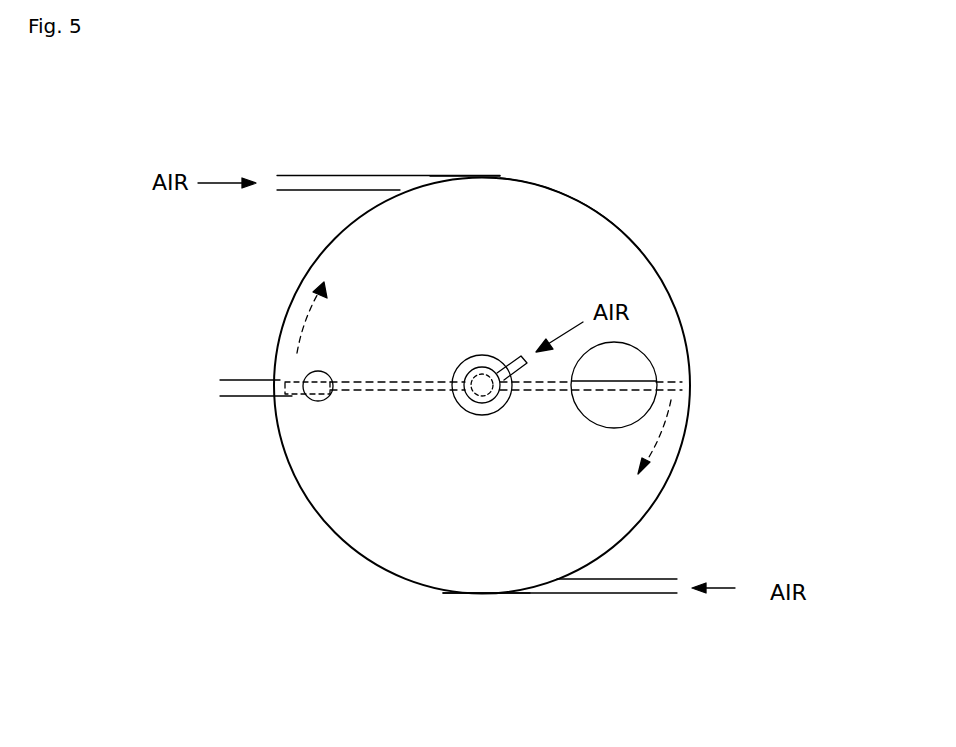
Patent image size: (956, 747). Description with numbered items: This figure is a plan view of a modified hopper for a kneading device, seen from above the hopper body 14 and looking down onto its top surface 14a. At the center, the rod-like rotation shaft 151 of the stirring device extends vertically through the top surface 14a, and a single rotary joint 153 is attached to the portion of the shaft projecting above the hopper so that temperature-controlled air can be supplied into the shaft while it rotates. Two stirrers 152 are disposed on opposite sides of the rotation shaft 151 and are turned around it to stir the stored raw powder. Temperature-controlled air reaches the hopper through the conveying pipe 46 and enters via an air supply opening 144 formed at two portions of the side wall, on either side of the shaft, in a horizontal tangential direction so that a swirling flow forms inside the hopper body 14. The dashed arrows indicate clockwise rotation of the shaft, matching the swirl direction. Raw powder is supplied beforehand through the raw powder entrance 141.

The hopper body 14 is at (642, 251).
The top surface of hopper body 14a is at (570, 232).
The conveying pipe 46 is at (350, 175).
The air supply opening 144 is at (438, 177).
The stirrer 152 is at (383, 394).
The raw powder entrance 141 is at (598, 413).
The rotation shaft 151 is at (468, 395).
The rotary joint 153 is at (462, 416).